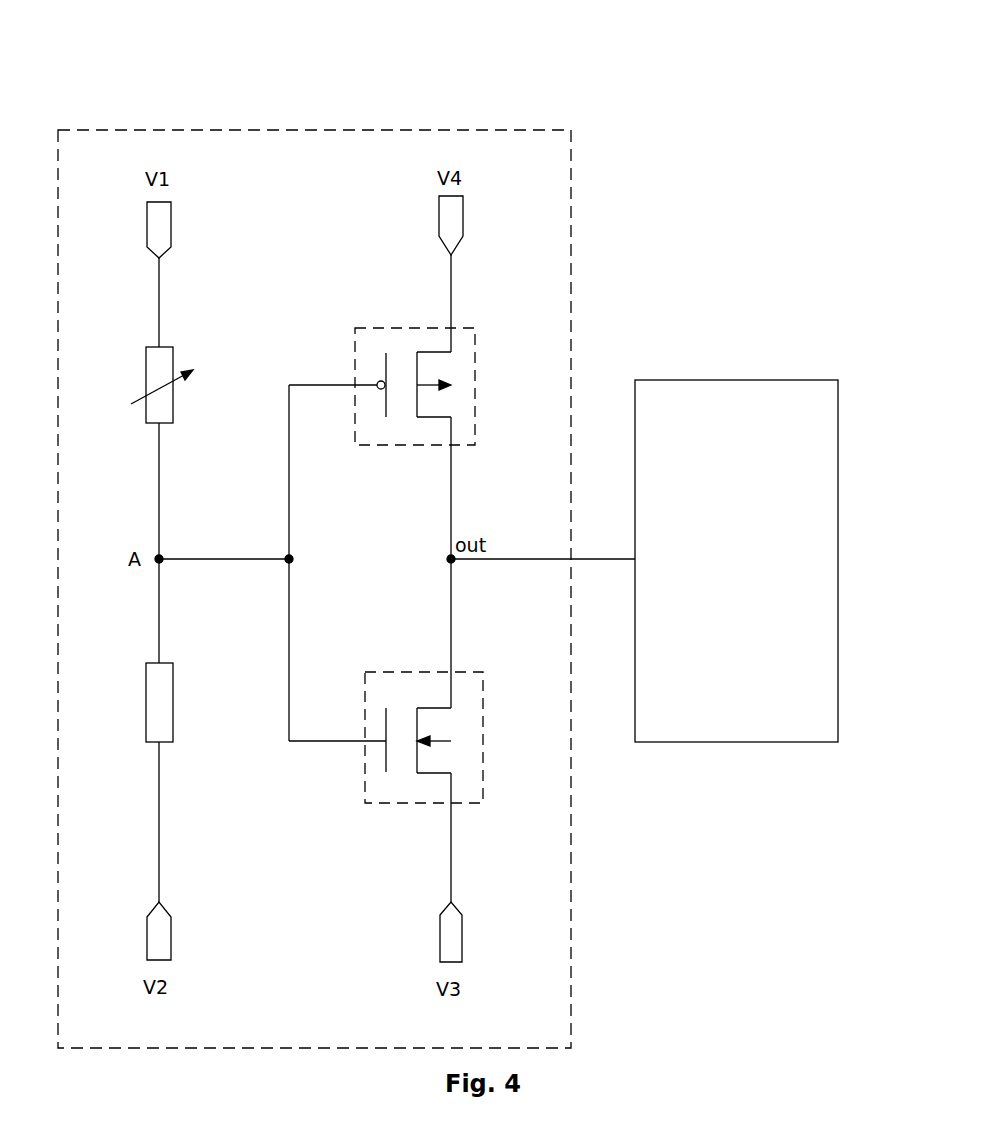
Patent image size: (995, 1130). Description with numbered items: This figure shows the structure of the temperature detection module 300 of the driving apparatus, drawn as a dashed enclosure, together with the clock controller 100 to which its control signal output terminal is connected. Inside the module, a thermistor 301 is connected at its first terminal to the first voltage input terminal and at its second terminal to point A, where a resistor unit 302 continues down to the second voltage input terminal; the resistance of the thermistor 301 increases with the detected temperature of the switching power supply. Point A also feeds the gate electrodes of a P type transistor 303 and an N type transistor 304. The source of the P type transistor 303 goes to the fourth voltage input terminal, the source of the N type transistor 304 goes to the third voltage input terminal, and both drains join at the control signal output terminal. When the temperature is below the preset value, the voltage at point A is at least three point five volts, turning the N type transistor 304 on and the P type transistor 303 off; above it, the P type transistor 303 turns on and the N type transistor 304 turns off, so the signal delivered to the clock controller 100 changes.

The temperature detection module 300 is at (314, 528).
The thermistor 301 is at (173, 362).
The resistor unit 302 is at (173, 705).
The P type transistor 303 is at (472, 390).
The N type transistor 304 is at (482, 743).
The clock controller 100 is at (751, 514).